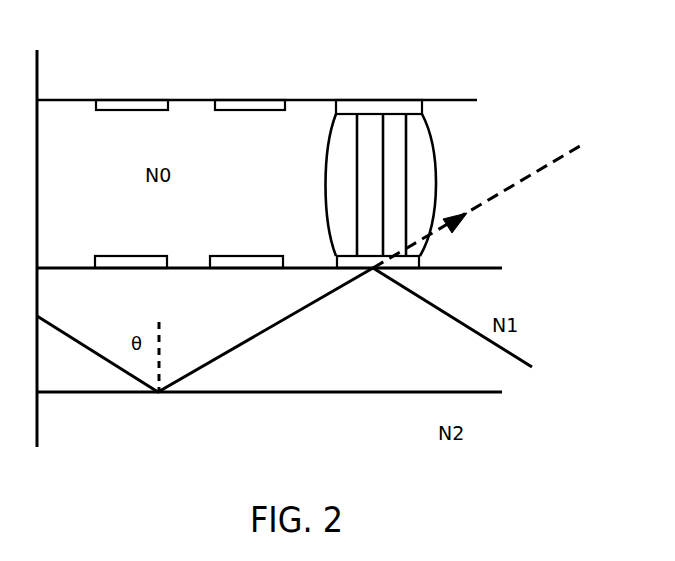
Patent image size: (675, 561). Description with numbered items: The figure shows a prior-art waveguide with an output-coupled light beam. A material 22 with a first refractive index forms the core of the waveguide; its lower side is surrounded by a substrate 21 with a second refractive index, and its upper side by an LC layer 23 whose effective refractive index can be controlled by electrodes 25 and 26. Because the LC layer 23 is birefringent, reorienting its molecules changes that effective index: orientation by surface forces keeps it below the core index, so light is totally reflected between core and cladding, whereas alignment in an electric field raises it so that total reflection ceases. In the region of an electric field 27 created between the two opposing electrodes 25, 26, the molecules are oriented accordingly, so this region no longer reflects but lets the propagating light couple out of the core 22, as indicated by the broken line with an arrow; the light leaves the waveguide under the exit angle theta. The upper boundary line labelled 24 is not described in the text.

The substrate 21 is at (269, 414).
The material (core) 22 is at (284, 330).
The LC layer 23 is at (269, 244).
The upper cladding layer 24 is at (257, 66).
The electrodes 25 is at (375, 105).
The electrodes 26 is at (130, 263).
The electric field 27 is at (438, 172).